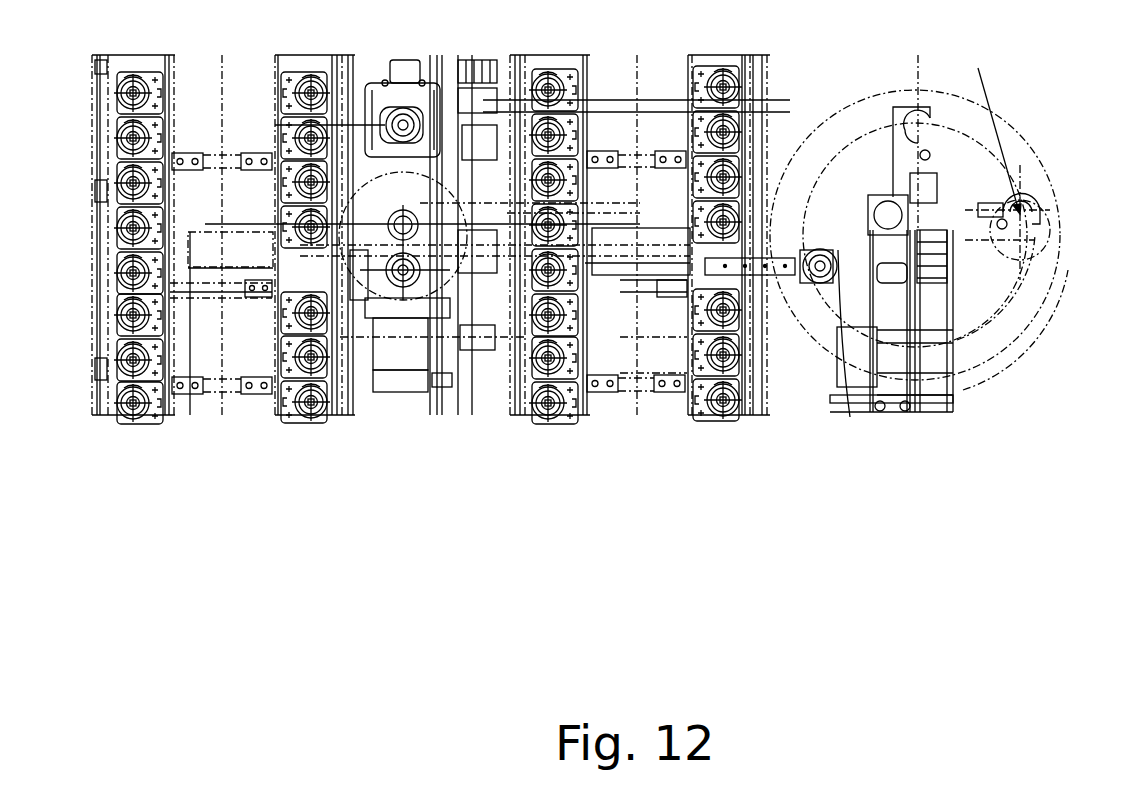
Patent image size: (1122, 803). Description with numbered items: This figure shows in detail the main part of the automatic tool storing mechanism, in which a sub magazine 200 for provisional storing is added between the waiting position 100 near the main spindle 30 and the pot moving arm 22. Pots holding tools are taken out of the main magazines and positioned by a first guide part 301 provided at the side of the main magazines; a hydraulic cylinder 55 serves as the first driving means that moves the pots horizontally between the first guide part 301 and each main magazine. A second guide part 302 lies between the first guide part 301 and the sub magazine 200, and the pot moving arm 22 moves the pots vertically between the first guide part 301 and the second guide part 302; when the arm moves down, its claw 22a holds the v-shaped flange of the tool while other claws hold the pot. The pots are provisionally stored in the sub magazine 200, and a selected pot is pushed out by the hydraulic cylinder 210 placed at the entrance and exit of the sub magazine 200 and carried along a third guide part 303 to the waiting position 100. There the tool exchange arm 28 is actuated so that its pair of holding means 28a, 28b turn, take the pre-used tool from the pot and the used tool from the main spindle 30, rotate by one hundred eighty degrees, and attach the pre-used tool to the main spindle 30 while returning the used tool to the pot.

The pot moving arm 22 is at (424, 79).
The claw 22a is at (422, 103).
The waiting position 100 is at (838, 245).
The holding means 28b is at (908, 107).
The tool exchange arm 28 is at (951, 235).
The holding means 28a is at (930, 363).
The main spindle 30 is at (1033, 257).
The third guide part 303 is at (758, 270).
The sub magazine 200 is at (760, 437).
The hydraulic cylinder 210 is at (596, 250).
The second guide part 302 is at (458, 232).
The first guide part 301 is at (325, 273).
The hydraulic cylinder 55 is at (207, 373).